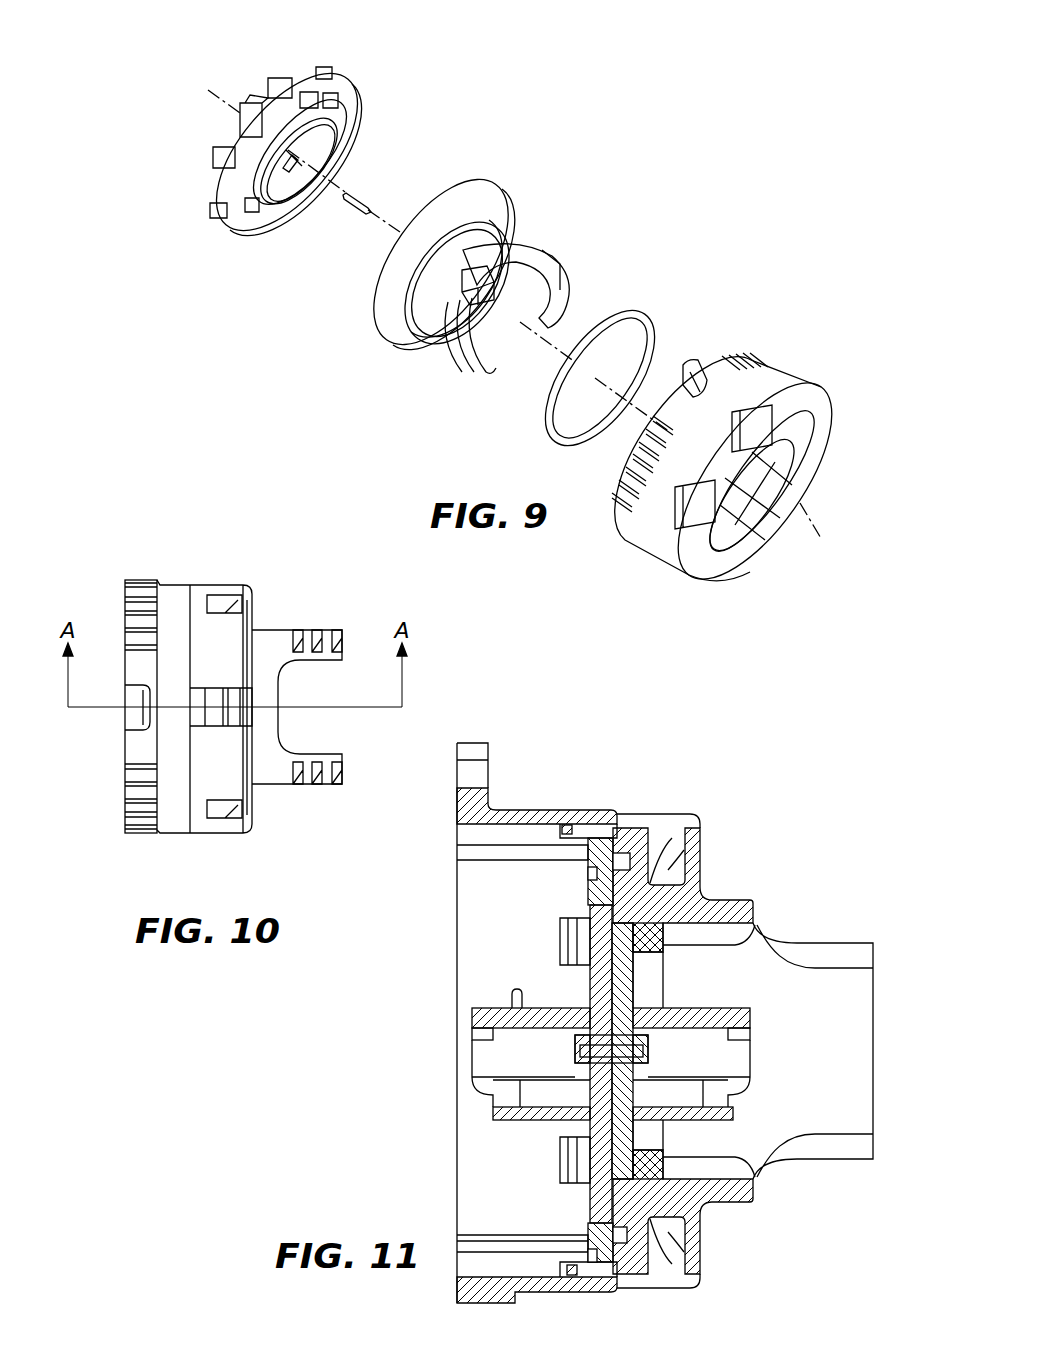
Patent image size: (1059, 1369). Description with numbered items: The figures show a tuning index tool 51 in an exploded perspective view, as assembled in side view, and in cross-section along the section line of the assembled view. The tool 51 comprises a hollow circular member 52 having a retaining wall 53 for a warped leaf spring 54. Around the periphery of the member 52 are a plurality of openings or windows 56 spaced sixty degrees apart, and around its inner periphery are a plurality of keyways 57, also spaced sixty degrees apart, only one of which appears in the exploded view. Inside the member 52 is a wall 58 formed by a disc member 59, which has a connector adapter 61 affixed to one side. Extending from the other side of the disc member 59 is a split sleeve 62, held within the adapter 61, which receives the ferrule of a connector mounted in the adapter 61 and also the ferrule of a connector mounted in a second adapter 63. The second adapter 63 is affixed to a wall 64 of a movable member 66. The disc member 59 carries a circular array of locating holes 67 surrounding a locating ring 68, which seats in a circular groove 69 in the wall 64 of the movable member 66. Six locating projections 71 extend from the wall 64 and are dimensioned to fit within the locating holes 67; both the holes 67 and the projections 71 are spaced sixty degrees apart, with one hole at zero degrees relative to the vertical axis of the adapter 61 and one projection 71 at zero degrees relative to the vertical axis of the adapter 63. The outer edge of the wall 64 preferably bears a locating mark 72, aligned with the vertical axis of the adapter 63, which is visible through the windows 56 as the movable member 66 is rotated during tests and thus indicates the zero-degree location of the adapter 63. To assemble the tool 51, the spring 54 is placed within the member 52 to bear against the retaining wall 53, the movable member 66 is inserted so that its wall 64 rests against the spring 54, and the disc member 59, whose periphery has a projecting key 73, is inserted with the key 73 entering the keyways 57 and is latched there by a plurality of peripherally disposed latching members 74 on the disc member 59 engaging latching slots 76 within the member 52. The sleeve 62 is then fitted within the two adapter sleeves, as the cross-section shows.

In FIG. 9, the tuning index tool 51 is at (526, 180).
In FIG. 10, the tuning index tool 51 is at (210, 569).
In FIG. 9, the hollow circular member 52 is at (777, 387).
In FIG. 10, the hollow circular member 52 is at (177, 828).
In FIG. 9, the retaining wall 53 is at (733, 563).
In FIG. 11, the retaining wall 53 is at (703, 863).
In FIG. 9, the warped leaf spring 54 is at (627, 312).
In FIG. 11, the warped leaf spring 54 is at (657, 883).
In FIG. 9, the openings or windows 56 is at (757, 427).
In FIG. 11, the openings or windows 56 is at (660, 824).
In FIG. 9, the keyways 57 is at (760, 478).
In FIG. 11, the wall 58 is at (588, 990).
In FIG. 9, the disc member 59 is at (352, 97).
In FIG. 9, the connector adapter 61 is at (248, 103).
In FIG. 11, the connector adapter 61 is at (477, 1007).
In FIG. 9, the split sleeve 62 is at (353, 208).
In FIG. 11, the split sleeve 62 is at (580, 1044).
In FIG. 9, the second adapter 63 is at (490, 285).
In FIG. 11, the second adapter 63 is at (738, 1007).
In FIG. 9, the wall 64 is at (455, 195).
In FIG. 11, the wall 64 is at (634, 977).
In FIG. 9, the movable member 66 is at (440, 318).
In FIG. 10, the movable member 66 is at (273, 640).
In FIG. 11, the movable member 66 is at (740, 1205).
In FIG. 9, the locating holes 67 is at (306, 92).
In FIG. 11, the locating holes 67 is at (595, 903).
In FIG. 9, the locating ring 68 is at (345, 120).
In FIG. 11, the locating ring 68 is at (657, 933).
In FIG. 11, the circular groove 69 is at (640, 947).
In FIG. 11, the locating projections 71 is at (590, 882).
In FIG. 9, the locating mark 72 is at (432, 212).
In FIG. 9, the projecting key 73 is at (325, 66).
In FIG. 11, the latching members 74 is at (567, 825).
In FIG. 11, the latching slots 76 is at (590, 824).